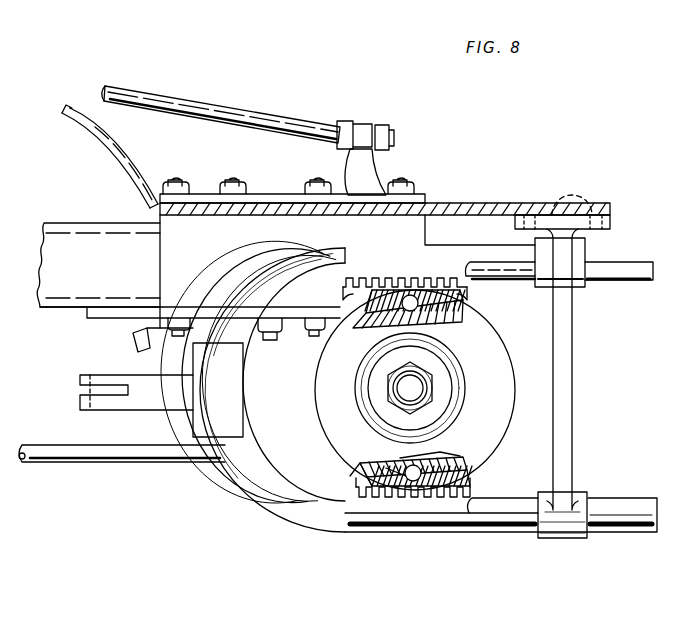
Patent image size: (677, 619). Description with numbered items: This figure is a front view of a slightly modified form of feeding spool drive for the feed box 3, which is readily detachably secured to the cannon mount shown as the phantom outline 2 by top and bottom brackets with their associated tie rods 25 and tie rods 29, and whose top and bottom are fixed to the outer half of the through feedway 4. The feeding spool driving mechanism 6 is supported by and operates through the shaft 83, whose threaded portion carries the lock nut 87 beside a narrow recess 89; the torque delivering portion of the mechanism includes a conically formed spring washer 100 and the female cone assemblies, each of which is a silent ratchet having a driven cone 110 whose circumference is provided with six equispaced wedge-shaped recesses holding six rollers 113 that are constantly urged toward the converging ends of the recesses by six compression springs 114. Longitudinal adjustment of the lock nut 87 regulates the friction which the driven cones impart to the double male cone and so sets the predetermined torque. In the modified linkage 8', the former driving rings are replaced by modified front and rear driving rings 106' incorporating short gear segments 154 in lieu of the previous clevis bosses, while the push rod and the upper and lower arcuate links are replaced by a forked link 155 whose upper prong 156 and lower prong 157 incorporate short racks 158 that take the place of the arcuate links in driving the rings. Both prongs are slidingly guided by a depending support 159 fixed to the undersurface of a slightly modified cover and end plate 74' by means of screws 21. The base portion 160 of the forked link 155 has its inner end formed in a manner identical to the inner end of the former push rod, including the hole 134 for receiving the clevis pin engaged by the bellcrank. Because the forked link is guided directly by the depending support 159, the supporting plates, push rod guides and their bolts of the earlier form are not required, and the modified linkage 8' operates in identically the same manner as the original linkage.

The cannon mount phantom outline 2 is at (128, 162).
The feed box 3 is at (204, 224).
The through feedway 4 is at (94, 216).
The feeding spool driving mechanism 6 is at (524, 339).
The modified linkage 8' is at (136, 409).
The screws 21 is at (548, 196).
The tie rods 25 is at (278, 126).
The tie rods 29 is at (164, 464).
The modified cover and end plate 74' is at (549, 205).
The shaft 83 is at (383, 406).
The lock nut 87 is at (437, 385).
The narrow recess 89 is at (428, 378).
The conically formed spring washer 100 is at (465, 400).
The modified driving rings 106' is at (343, 477).
The driven cone 110 is at (486, 428).
The rollers 113 is at (419, 455).
The compression springs 114 is at (384, 468).
The hole 134 is at (112, 348).
The short gear segments 154 is at (474, 474).
The forked link 155 is at (254, 382).
The upper prong 156 is at (450, 252).
The lower prong 157 is at (446, 534).
The short racks 158 is at (464, 293).
The depending support 159 is at (572, 364).
The base portion 160 is at (190, 367).